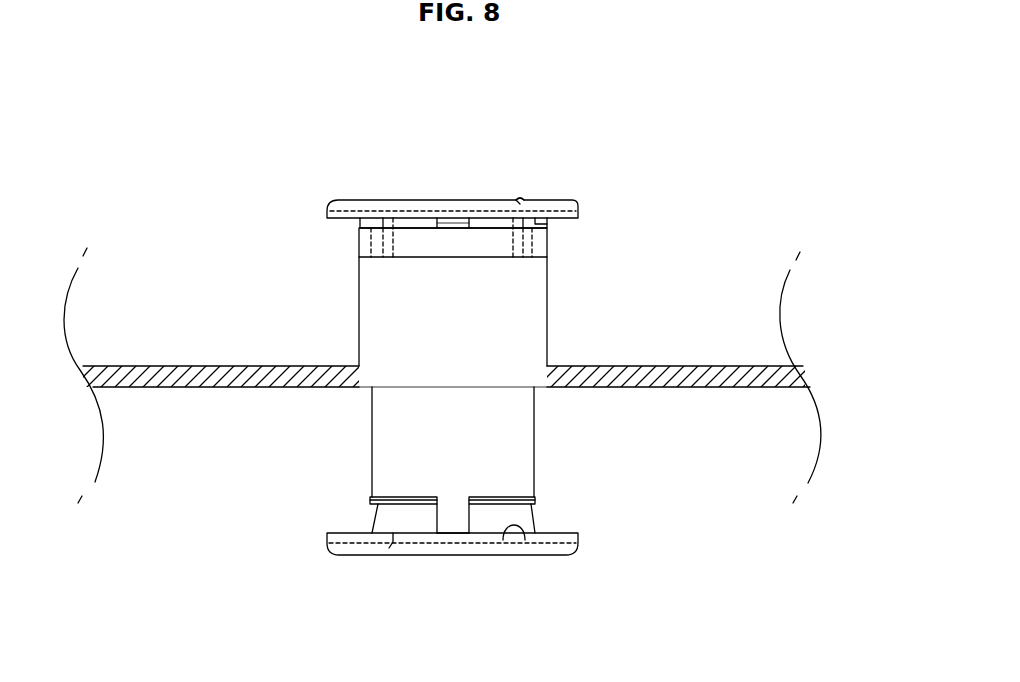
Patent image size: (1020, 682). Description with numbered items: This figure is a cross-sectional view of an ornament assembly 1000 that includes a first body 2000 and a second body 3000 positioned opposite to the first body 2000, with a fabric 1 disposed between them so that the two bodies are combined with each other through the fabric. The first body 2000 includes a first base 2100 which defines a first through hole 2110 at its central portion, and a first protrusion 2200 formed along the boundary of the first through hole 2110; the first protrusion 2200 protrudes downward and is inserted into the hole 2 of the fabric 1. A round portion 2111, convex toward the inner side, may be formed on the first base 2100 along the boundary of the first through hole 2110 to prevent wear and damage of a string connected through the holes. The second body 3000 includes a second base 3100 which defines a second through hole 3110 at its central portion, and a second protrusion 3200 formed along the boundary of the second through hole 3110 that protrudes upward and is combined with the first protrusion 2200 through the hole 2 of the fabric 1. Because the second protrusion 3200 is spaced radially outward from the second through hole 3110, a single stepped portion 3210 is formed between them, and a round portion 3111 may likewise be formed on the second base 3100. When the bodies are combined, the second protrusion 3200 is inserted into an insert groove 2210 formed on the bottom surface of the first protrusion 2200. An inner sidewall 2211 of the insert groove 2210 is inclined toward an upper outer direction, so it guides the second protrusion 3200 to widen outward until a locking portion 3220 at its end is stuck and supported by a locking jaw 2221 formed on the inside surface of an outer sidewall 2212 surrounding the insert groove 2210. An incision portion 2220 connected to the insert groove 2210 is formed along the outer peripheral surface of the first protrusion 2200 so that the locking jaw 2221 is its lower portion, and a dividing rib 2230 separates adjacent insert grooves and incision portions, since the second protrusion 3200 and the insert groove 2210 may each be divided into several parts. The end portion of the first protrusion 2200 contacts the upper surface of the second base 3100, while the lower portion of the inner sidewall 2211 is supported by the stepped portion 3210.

The ornament assembly 1000 is at (113, 86).
The fabric 1 is at (700, 376).
The hole 2 is at (460, 380).
The first body 2000 is at (330, 188).
The first base 2100 is at (580, 206).
The first through hole 2110 is at (488, 210).
The round portion 2111 is at (517, 205).
The first protrusion 2200 is at (360, 236).
The insert groove 2210 is at (530, 245).
The inner sidewall 2211 is at (523, 257).
The outer sidewall 2212 is at (535, 250).
The incision portion 2220 is at (405, 224).
The locking jaw 2221 is at (427, 228).
The dividing rib 2230 is at (450, 228).
The second body 3000 is at (596, 537).
The second base 3100 is at (330, 538).
The second through hole 3110 is at (455, 545).
The round portion 3111 is at (392, 548).
The second protrusion 3200 is at (365, 512).
The stepped portion 3210 is at (510, 545).
The locking portion 3220 is at (537, 498).